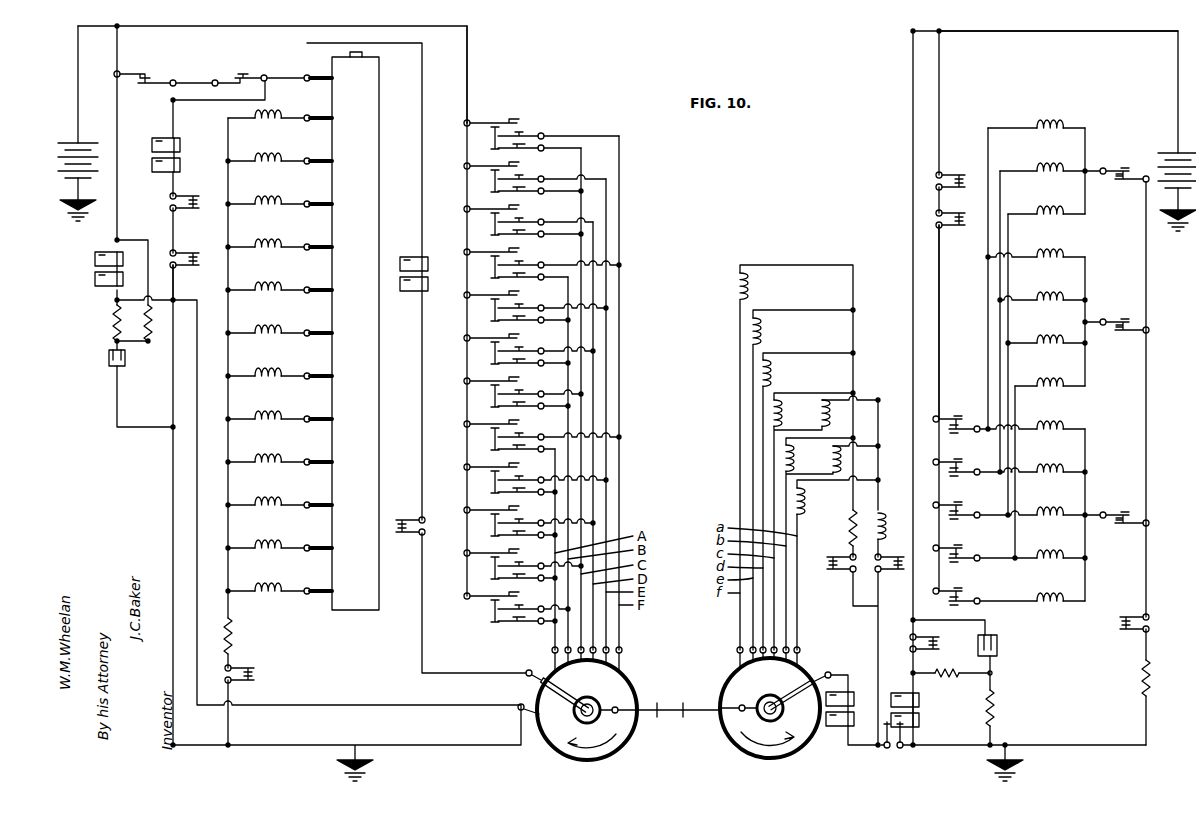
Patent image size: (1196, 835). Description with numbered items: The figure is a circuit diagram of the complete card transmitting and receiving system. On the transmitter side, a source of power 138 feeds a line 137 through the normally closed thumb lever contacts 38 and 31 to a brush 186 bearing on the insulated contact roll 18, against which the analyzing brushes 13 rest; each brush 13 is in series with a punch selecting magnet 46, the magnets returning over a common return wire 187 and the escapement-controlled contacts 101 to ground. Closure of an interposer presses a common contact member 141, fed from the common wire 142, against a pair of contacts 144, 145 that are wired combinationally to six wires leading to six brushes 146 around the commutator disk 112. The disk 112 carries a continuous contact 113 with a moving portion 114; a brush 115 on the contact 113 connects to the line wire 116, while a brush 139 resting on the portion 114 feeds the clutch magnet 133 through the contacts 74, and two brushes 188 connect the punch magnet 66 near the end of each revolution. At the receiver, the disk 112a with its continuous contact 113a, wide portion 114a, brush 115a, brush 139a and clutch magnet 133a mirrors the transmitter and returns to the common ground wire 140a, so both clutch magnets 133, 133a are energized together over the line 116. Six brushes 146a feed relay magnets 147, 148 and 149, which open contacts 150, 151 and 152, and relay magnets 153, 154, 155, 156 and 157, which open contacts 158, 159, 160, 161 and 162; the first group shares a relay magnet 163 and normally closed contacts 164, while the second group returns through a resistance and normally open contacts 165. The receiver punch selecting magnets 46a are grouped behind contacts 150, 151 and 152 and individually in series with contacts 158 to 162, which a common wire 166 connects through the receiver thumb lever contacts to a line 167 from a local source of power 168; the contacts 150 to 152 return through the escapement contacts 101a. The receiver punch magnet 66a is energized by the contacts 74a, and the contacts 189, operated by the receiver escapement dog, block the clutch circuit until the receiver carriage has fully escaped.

The line 137 is at (78, 72).
The source of power 138 is at (76, 142).
The normally closed contacts 38 is at (147, 80).
The contacts 31 is at (241, 78).
The brush 186 is at (299, 90).
The punch selecting magnets 46 is at (262, 154).
The brushes 13 is at (320, 252).
The contact roll 18 is at (364, 220).
The common wire 142 is at (468, 86).
The common contact member 141 is at (496, 120).
The contacts 144 is at (516, 134).
The contacts 145 is at (526, 150).
The clutch magnet 133 is at (412, 293).
The punch magnet 66 is at (104, 290).
The common return wire 187 is at (229, 400).
The contacts 74 is at (398, 523).
The contacts 101 is at (252, 676).
The brush 139 is at (531, 669).
The moving contact portion 114 is at (547, 690).
The brush 115 is at (615, 707).
The line wire 116 is at (648, 710).
The continuous contact 113 is at (580, 722).
The insulated disk 112 is at (549, 753).
The brushes 188 is at (518, 711).
The brushes 146 is at (622, 652).
The brushes 146a is at (742, 658).
The brush 115a is at (745, 706).
The continuous contact 113a is at (779, 719).
The wide portion 114a is at (812, 676).
The brush 139a is at (831, 672).
The disk 112a is at (738, 752).
The clutch magnet 133a is at (842, 730).
The contacts 189 is at (893, 720).
The punch magnet 66a is at (926, 732).
The contacts 74a is at (946, 648).
The common ground wire 140a is at (1077, 745).
The contacts 101a is at (1118, 628).
The contacts 150 is at (1124, 525).
The contacts 151 is at (1124, 332).
The contacts 152 is at (1124, 180).
The contacts 158 is at (968, 582).
The contacts 159 is at (968, 539).
The contacts 160 is at (968, 496).
The contacts 161 is at (968, 452).
The contacts 162 is at (968, 408).
The common wire 166 is at (939, 344).
The line 167 is at (1020, 32).
The source of power 168 is at (1176, 153).
The punch selecting magnets 46a is at (1052, 125).
The relay magnet 163 is at (880, 522).
The normally closed contacts 164 is at (908, 572).
The normally open contacts 165 is at (829, 560).
The relay magnet 147 is at (803, 502).
The relay magnet 148 is at (826, 462).
The relay magnet 149 is at (815, 418).
The relay magnet 153 is at (790, 458).
The relay magnet 154 is at (778, 412).
The relay magnet 155 is at (768, 376).
The relay magnet 156 is at (757, 332).
The relay magnet 157 is at (752, 288).